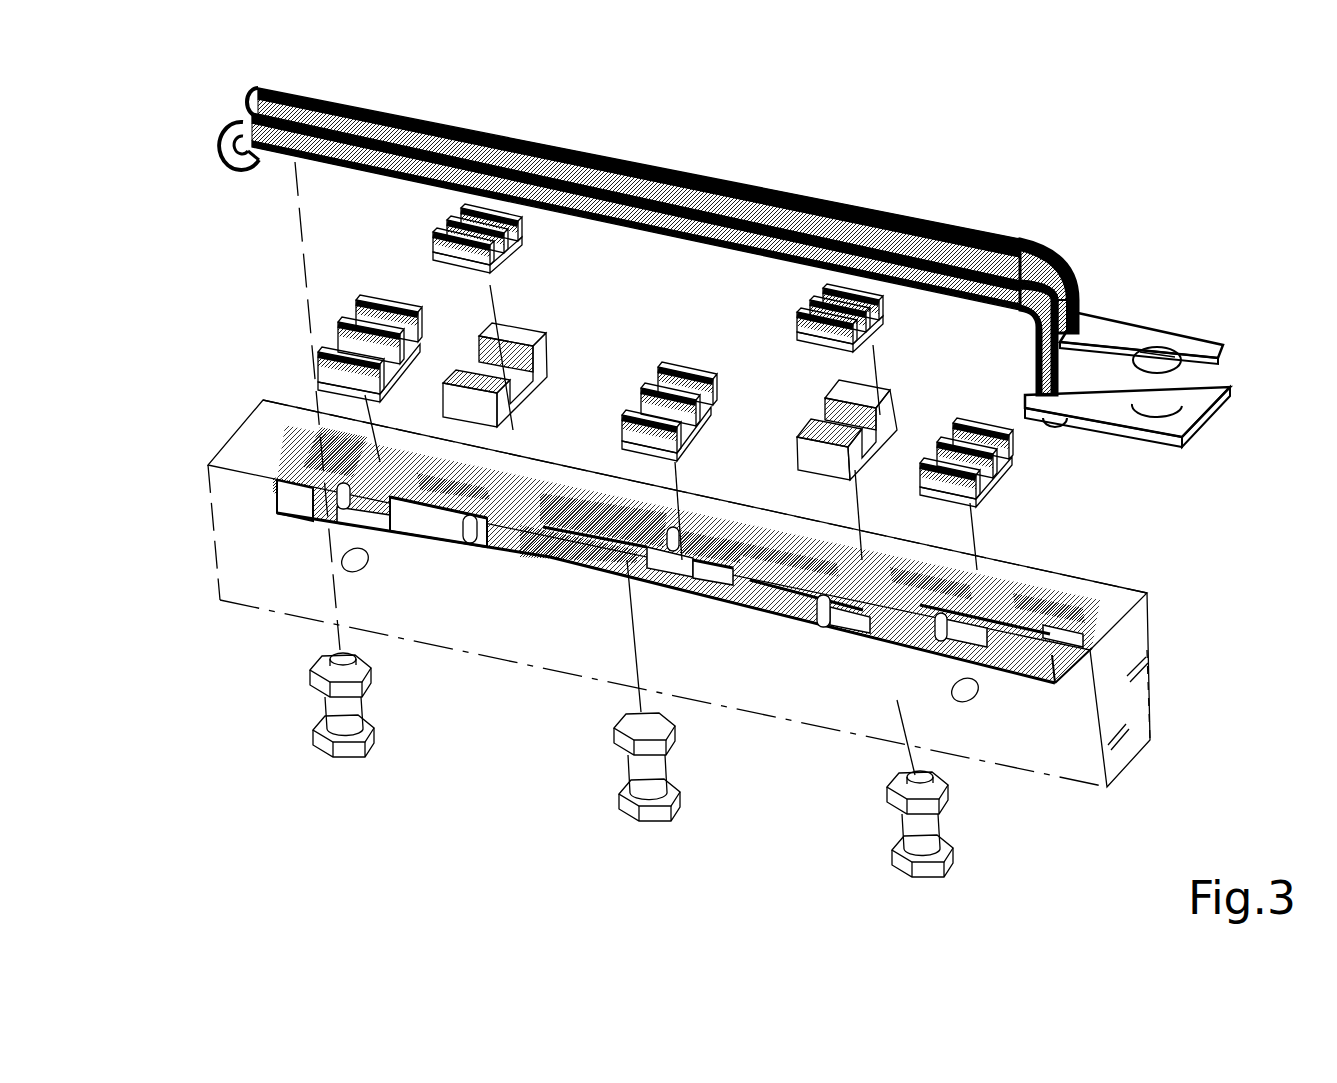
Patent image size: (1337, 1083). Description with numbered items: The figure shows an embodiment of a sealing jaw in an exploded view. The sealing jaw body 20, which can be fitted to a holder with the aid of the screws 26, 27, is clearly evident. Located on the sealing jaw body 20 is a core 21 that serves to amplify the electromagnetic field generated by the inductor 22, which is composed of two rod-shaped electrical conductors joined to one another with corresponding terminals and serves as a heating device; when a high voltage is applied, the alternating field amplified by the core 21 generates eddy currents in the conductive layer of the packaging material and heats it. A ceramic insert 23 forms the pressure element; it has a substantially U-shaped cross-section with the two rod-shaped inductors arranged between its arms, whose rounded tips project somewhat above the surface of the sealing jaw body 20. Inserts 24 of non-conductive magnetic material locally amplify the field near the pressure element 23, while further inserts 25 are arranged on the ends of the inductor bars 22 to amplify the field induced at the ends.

The sealing jaw body 20 is at (1145, 696).
The core 21 is at (283, 513).
The inductor 22 is at (460, 122).
The ceramic insert 23 is at (795, 406).
The inserts of FERROTRON 24 is at (872, 325).
The further inserts of FERROTRON 25 is at (1018, 478).
The screw 26 is at (663, 822).
The screw 27 is at (958, 877).